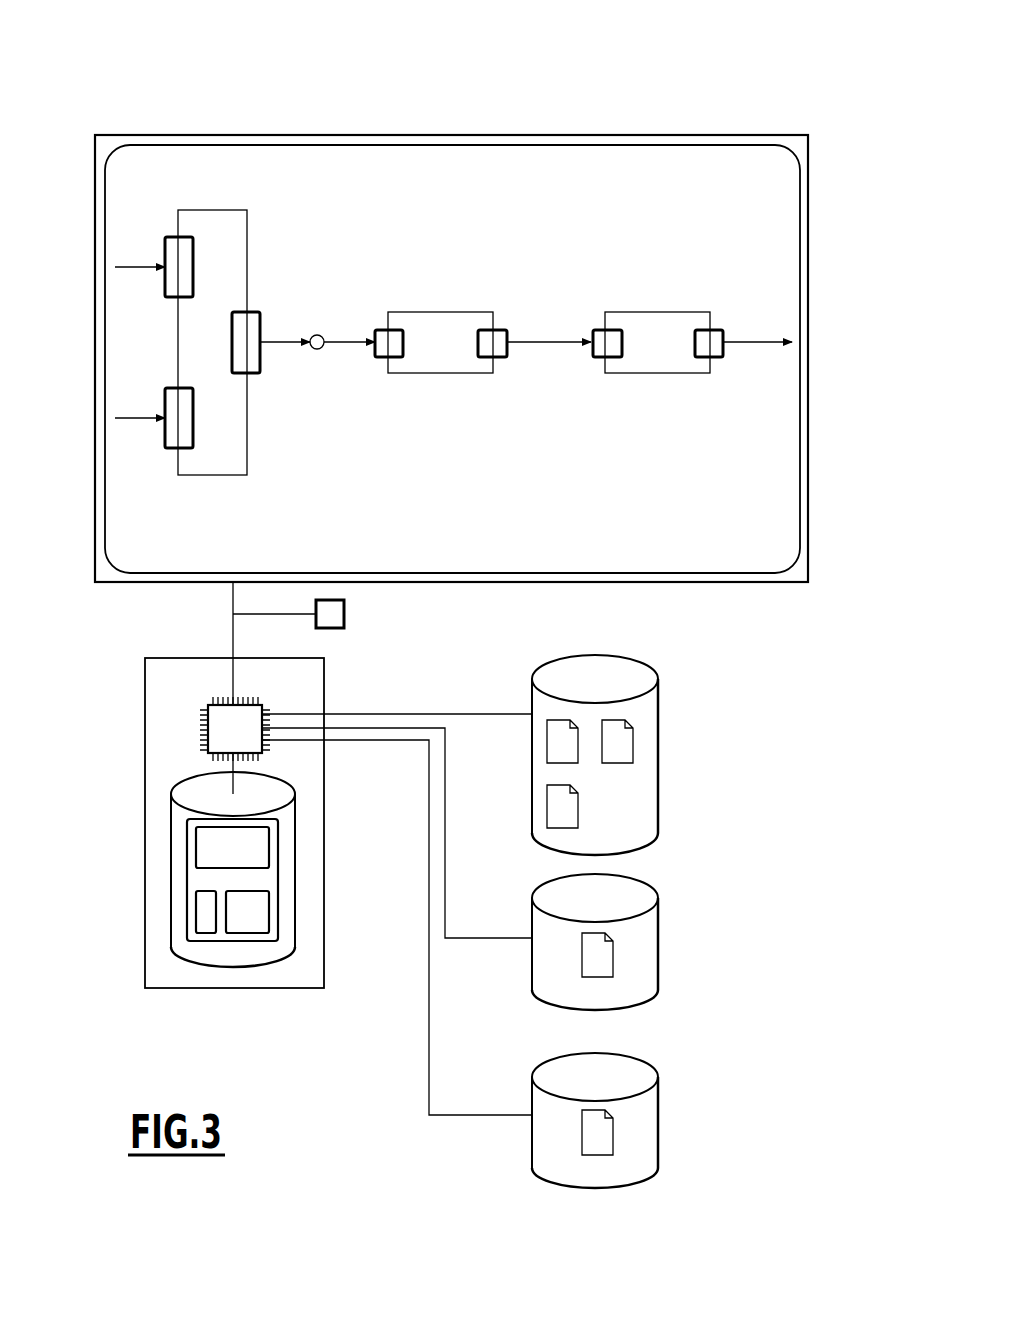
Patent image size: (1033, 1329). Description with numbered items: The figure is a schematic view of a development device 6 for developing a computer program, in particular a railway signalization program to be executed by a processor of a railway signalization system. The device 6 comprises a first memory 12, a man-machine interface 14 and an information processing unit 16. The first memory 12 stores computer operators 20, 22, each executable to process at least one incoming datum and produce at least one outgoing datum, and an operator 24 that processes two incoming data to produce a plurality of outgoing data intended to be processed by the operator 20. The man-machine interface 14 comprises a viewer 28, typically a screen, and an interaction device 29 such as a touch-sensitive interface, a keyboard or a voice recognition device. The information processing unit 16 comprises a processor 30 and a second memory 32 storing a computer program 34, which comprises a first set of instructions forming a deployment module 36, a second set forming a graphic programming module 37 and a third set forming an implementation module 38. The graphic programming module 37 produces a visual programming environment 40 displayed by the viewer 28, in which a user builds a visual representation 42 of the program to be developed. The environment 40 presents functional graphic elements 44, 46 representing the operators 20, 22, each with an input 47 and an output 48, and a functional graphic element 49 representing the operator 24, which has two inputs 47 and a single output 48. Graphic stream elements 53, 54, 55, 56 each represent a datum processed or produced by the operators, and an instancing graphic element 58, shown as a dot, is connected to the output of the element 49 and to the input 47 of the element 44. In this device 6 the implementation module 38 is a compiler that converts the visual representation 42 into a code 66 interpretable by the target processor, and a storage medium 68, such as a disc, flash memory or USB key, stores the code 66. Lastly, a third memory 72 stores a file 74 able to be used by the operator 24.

The development device 6 is at (118, 73).
The man-machine interface 14 is at (710, 593).
The viewer 28 is at (640, 140).
The visual programming environment 40 is at (313, 177).
The functional graphic element 49 is at (205, 476).
The graphic stream element 55 is at (125, 267).
The graphic stream element 56 is at (125, 420).
The input 47 is at (185, 283).
The output 48 is at (250, 328).
The instancing graphic element 58 is at (323, 330).
The functional graphic element 44 is at (438, 374).
The graphic stream element 53 is at (532, 345).
The functional graphic element 46 is at (648, 374).
The visual representation 42 is at (685, 297).
The graphic stream element 54 is at (735, 346).
The interaction device 29 is at (344, 614).
The information processing unit 16 is at (145, 716).
The processor 30 is at (240, 720).
The second memory 32 is at (268, 790).
The computer program 34 is at (187, 868).
The implementation module 38 is at (240, 846).
The deployment module 36 is at (206, 920).
The graphic programming module 37 is at (238, 920).
The first memory 12 is at (640, 713).
The computer operator 20 is at (560, 745).
The computer operator 22 is at (618, 746).
The operator 24 is at (560, 807).
The storage medium 68 is at (613, 895).
The code 66 is at (597, 965).
The third memory 72 is at (615, 1073).
The file 74 is at (597, 1143).